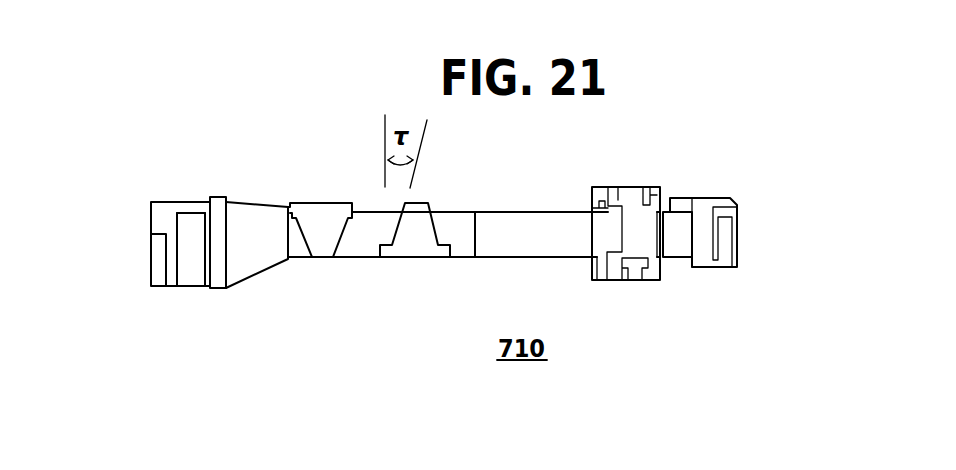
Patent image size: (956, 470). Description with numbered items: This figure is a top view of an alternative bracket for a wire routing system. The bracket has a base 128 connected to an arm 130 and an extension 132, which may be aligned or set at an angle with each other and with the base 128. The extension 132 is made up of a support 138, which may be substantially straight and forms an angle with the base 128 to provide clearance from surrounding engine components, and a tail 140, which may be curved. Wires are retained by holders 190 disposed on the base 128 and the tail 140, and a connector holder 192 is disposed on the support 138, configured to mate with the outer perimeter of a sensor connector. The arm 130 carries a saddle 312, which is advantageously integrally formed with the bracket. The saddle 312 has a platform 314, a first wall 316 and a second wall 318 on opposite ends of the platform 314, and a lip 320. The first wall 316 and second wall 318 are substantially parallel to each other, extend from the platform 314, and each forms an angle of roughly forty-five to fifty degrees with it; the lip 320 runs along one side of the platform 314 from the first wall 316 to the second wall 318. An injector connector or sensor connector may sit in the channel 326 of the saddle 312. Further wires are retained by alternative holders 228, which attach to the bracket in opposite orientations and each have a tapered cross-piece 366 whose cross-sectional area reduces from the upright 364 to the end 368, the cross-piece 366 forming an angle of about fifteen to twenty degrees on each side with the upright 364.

The base 128 is at (365, 258).
The arm 130 is at (252, 268).
The extension 132 is at (665, 262).
The support 138 is at (503, 218).
The tail 140 is at (677, 247).
The alternative holder 190 is at (700, 205).
The alternative connector holder 192 is at (611, 195).
The alternative holder 228 is at (415, 248).
The saddle 312 is at (151, 285).
The platform 314 is at (193, 287).
The first wall 316 is at (223, 197).
The second wall 318 is at (152, 204).
The lip 320 is at (183, 213).
The channel 326 is at (187, 267).
The upright 364 is at (302, 208).
The tapered cross-piece 366 is at (335, 212).
The end 368 is at (320, 258).